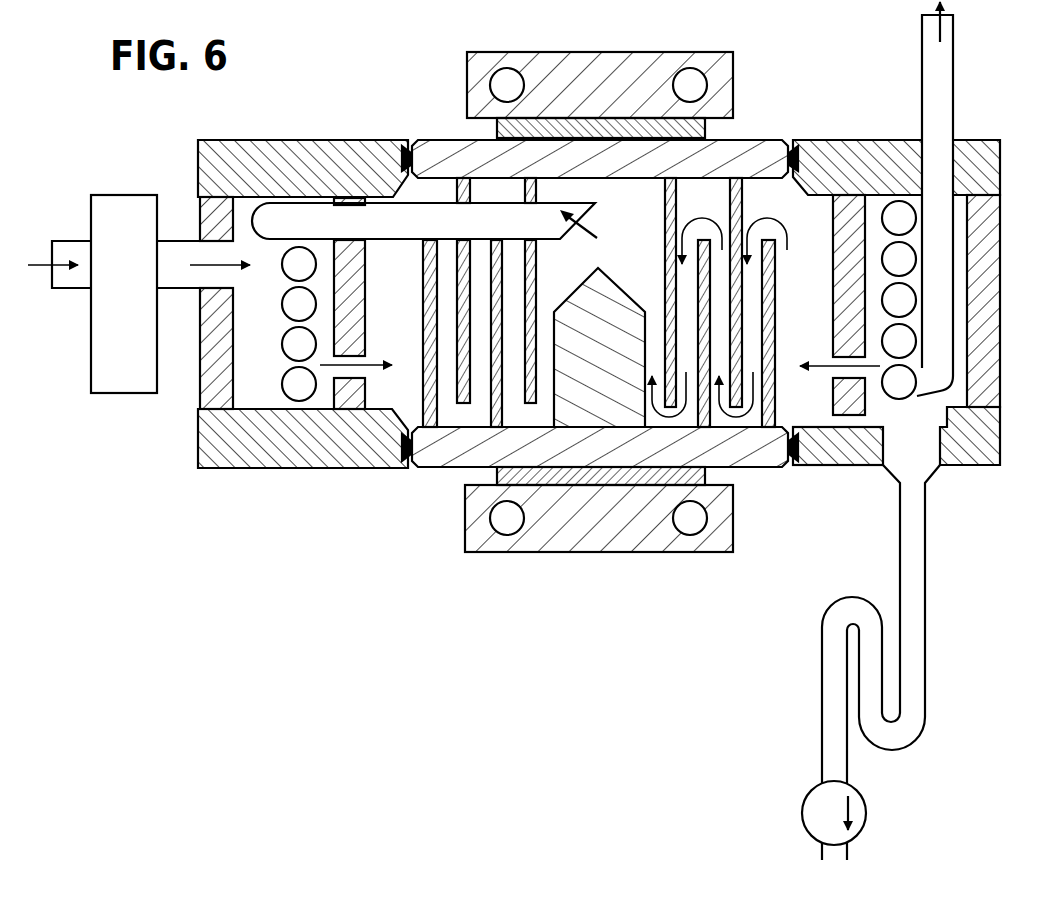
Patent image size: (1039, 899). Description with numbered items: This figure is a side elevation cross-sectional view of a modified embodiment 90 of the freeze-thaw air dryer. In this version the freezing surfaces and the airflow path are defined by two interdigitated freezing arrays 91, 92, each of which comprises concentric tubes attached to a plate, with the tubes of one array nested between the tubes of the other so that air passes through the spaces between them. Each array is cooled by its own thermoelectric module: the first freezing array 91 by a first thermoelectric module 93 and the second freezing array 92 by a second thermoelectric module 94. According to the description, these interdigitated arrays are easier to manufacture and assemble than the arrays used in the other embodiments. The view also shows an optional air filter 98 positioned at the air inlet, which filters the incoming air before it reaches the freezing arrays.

The modified embodiment of the freeze-thaw air dryer 90 is at (200, 625).
The first interdigitated freezing array 91 is at (446, 138).
The second interdigitated freezing array 92 is at (433, 470).
The thermoelectric module 93 is at (707, 127).
The thermoelectric module 94 is at (712, 481).
The air filter 98 is at (110, 395).